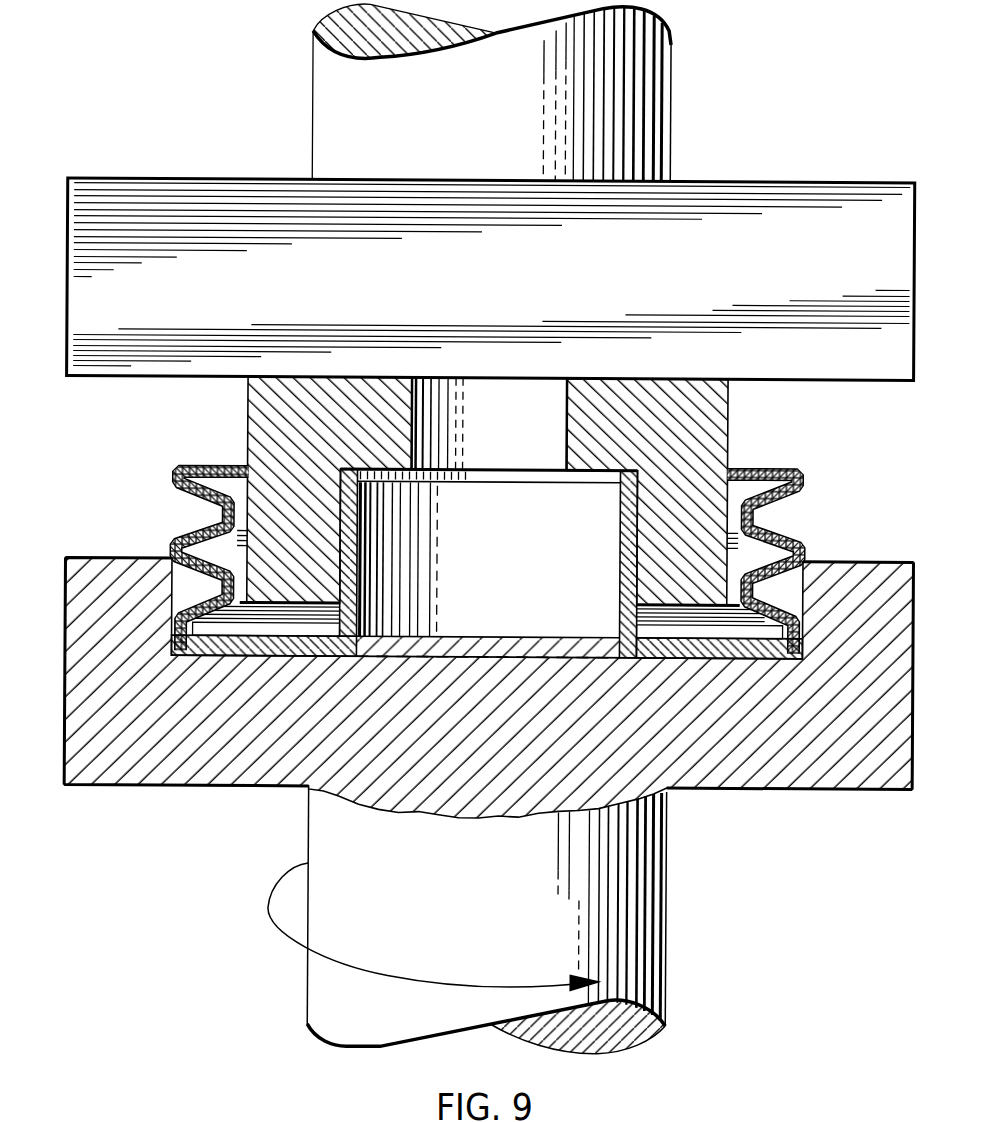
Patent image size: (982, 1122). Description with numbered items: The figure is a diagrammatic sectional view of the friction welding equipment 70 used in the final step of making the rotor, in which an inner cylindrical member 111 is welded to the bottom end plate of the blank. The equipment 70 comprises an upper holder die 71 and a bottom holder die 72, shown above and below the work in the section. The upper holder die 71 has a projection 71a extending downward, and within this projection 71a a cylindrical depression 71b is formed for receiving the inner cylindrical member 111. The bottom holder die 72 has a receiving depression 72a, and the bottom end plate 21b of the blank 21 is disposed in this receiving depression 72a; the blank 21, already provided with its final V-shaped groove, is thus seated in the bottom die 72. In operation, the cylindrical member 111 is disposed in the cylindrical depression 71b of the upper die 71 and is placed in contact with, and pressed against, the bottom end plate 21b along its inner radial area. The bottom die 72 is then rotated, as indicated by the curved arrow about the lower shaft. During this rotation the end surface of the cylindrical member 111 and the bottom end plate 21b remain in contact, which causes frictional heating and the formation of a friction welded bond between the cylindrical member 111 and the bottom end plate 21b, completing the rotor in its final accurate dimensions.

The friction welding equipment 70 is at (262, 140).
The upper holder die 71 is at (722, 198).
The projection 71a is at (708, 421).
The cylindrical depression 71b is at (632, 513).
The inner cylindrical member 111 is at (624, 552).
The blank 21 is at (208, 462).
The bottom end plate 21b is at (650, 654).
The bottom holder die 72 is at (740, 794).
The receiving depression 72a is at (692, 645).